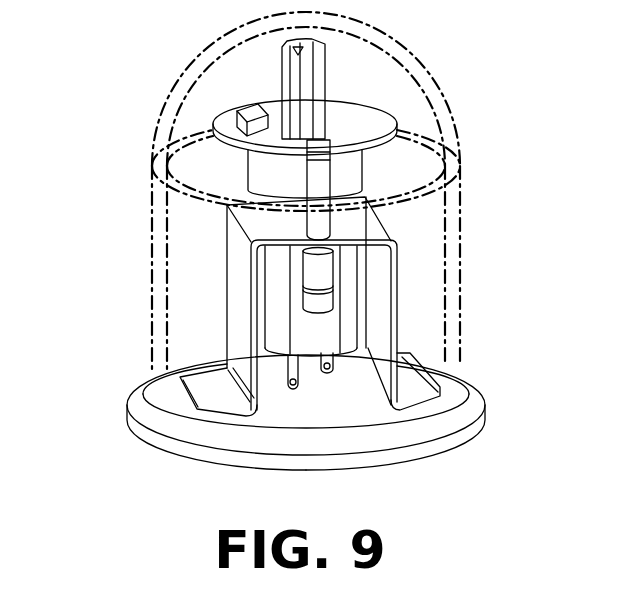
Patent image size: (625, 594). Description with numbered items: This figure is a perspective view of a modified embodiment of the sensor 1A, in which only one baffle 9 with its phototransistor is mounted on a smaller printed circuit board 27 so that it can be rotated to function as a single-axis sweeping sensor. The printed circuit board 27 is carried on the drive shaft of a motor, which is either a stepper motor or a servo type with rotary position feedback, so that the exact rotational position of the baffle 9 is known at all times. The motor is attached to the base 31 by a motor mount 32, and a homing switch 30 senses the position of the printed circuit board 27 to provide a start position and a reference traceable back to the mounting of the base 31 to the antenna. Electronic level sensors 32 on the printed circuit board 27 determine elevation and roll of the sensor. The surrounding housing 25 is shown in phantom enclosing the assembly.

The sensor 1A is at (122, 313).
The baffle 9 is at (331, 72).
The transparent dome housing 25 is at (148, 233).
The printed circuit board 27 is at (397, 124).
The homing switch 30 is at (330, 178).
The base 31 is at (152, 447).
The motor mount 32 is at (218, 116).